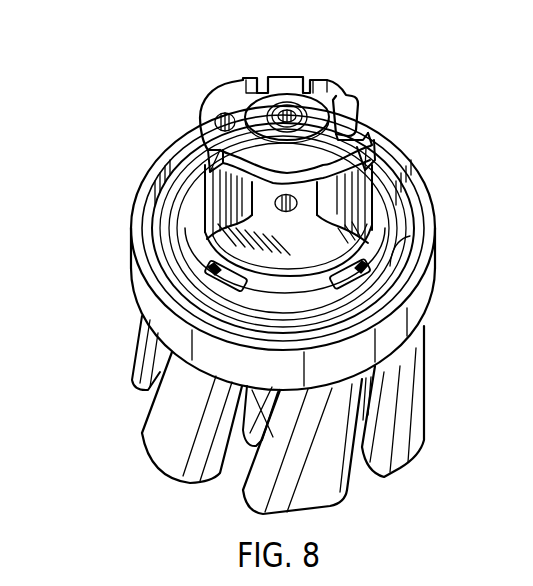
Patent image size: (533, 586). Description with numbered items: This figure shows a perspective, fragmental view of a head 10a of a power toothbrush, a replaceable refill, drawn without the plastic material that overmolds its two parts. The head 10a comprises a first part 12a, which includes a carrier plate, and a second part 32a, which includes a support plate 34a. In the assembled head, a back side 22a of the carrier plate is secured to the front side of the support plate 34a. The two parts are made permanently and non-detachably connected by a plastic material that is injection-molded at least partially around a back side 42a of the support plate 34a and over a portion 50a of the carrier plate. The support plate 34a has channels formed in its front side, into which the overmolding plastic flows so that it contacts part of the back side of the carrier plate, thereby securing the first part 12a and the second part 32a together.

The head 10a is at (345, 64).
The first part 12a is at (217, 350).
The back side of the carrier plate 22a is at (405, 157).
The second part 32a is at (345, 100).
The support plate 34a is at (245, 125).
The back side of the support plate 42a is at (390, 265).
The portion of the carrier plate 50a is at (372, 273).